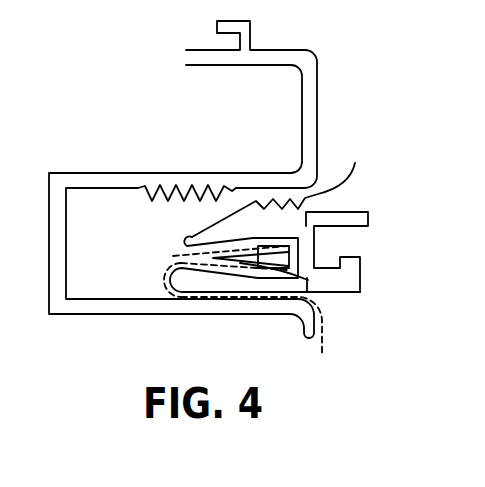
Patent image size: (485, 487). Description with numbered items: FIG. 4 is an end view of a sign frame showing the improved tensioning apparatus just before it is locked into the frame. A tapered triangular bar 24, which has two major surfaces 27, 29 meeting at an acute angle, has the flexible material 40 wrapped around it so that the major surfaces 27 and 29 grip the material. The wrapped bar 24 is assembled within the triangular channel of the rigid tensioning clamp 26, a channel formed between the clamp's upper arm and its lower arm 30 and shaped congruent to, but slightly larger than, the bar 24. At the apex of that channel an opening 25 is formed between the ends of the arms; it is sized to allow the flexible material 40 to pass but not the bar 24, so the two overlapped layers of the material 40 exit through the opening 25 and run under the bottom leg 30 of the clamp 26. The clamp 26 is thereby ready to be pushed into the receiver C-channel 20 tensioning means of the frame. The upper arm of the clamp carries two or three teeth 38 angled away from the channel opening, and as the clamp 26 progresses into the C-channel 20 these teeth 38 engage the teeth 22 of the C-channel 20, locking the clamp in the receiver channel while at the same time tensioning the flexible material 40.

The receiver C-channel 20 is at (116, 217).
The teeth of the C-channel 22 is at (182, 192).
The tapered triangular bar 24 is at (289, 249).
The opening 25 is at (187, 250).
The tensioning clamp 26 is at (361, 284).
The major surface 27 is at (256, 238).
The major surface 29 is at (287, 280).
The lower arm 30 is at (215, 282).
The teeth 38 is at (282, 188).
The flexible material 40 is at (322, 334).